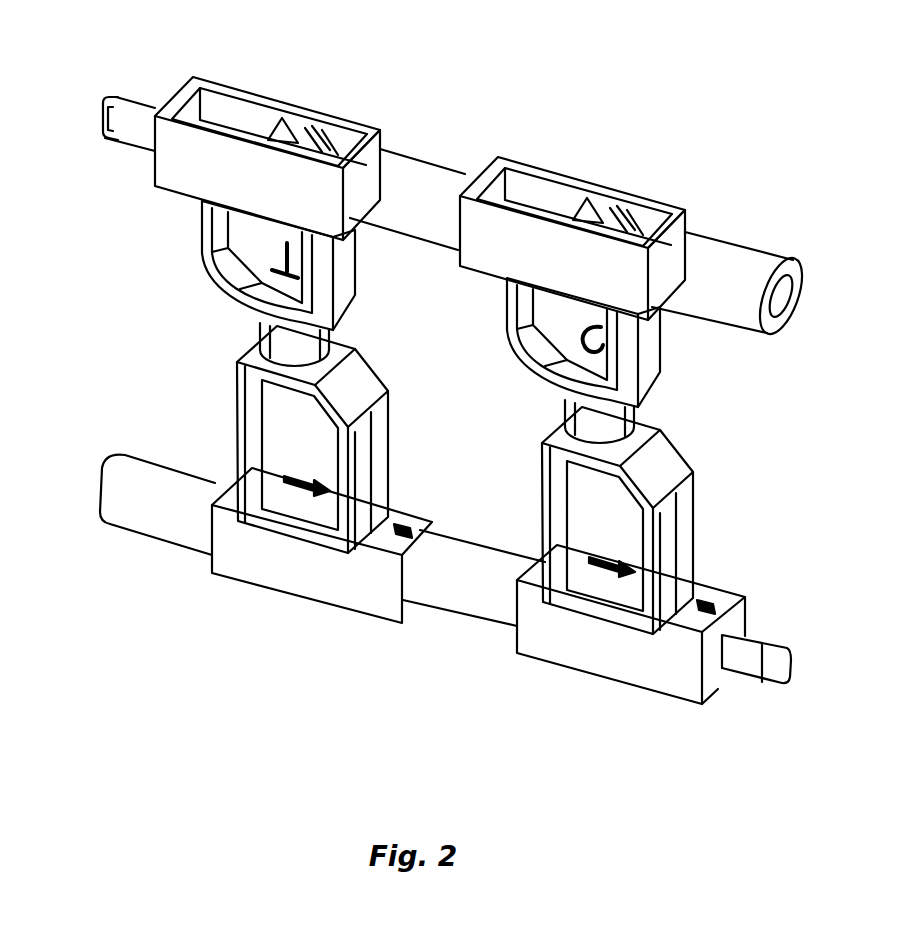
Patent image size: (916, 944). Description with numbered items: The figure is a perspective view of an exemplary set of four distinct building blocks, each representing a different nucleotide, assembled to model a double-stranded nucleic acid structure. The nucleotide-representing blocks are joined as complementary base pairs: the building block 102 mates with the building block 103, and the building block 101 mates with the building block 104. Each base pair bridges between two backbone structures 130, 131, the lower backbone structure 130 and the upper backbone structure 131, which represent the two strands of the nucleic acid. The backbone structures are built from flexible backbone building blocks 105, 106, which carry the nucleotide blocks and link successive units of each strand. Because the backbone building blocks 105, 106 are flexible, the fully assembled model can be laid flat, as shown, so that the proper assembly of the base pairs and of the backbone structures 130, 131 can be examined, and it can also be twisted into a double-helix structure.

The nucleotide building block 101 is at (328, 442).
The nucleotide building block 102 is at (633, 533).
The nucleotide building block 103 is at (592, 357).
The nucleotide building block 104 is at (285, 302).
The backbone building block 105 is at (297, 582).
The backbone building block 106 is at (483, 608).
The backbone structure 130 is at (59, 560).
The backbone structure 131 is at (827, 238).